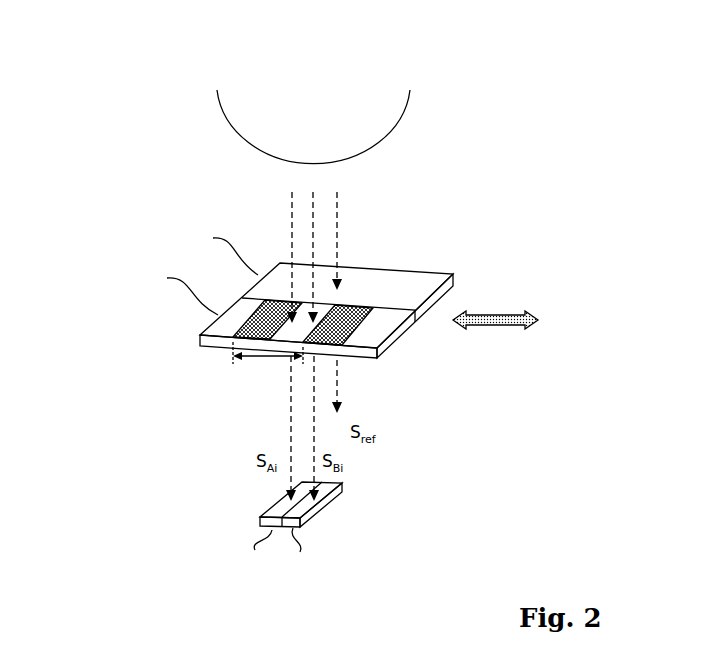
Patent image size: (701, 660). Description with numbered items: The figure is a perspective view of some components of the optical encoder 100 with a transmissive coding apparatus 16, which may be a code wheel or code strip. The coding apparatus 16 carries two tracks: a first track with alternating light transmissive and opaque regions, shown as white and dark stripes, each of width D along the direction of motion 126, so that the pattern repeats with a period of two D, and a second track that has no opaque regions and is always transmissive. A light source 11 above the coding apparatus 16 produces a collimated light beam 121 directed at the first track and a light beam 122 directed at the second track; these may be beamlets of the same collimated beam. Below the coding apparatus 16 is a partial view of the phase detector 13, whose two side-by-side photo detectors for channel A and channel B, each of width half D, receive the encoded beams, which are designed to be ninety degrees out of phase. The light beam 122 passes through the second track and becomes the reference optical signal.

The optical encoder 100 is at (90, 62).
The light source 11 is at (313, 127).
The light beam 121 is at (278, 225).
The light beam 122 is at (347, 218).
The coding apparatus 16 is at (464, 270).
The direction of motion 126 is at (520, 324).
The phase detector 13 is at (388, 500).